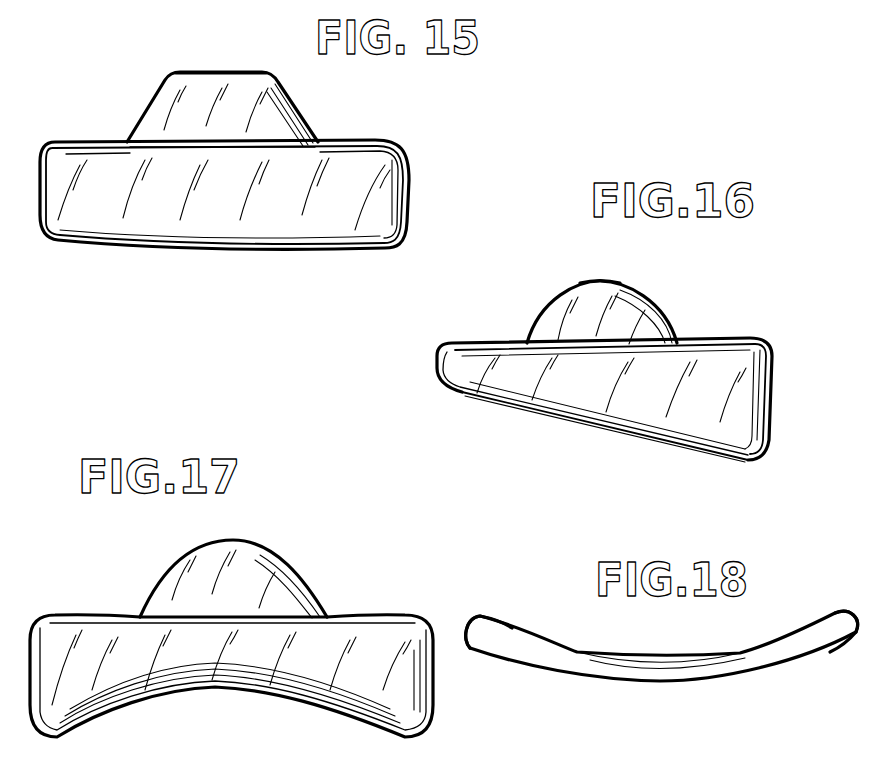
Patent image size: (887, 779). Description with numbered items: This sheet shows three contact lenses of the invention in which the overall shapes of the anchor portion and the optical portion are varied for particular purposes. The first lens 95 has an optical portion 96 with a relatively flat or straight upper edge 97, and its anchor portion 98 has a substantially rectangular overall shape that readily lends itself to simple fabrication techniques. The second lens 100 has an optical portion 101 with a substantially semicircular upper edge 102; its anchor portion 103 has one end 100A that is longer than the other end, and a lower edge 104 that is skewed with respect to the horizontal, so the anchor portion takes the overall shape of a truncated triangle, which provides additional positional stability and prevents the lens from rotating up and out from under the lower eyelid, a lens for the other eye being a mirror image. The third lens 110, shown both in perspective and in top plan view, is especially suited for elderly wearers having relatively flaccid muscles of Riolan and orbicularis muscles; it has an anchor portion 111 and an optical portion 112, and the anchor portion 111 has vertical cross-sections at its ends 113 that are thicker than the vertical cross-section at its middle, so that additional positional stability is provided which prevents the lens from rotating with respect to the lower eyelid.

In FIG. 15, the lens 95 is at (420, 178).
In FIG. 15, the optical portion 96 is at (272, 122).
In FIG. 15, the upper edge 97 is at (229, 71).
In FIG. 15, the anchor portion 98 is at (260, 228).
In FIG. 16, the lens 100 is at (783, 362).
In FIG. 16, the end 100A is at (775, 413).
In FIG. 16, the optical portion 101 is at (625, 318).
In FIG. 16, the upper edge 102 is at (600, 272).
In FIG. 16, the anchor portion 103 is at (680, 417).
In FIG. 16, the lower edge 104 is at (590, 430).
In FIG. 17, the lens 110 is at (374, 604).
In FIG. 18, the lens 110 is at (552, 633).
In FIG. 17, the anchor portion 111 is at (350, 683).
In FIG. 18, the anchor portion 111 is at (750, 663).
In FIG. 17, the optical portion 112 is at (250, 573).
In FIG. 18, the optical portion 112 is at (600, 665).
In FIG. 18, the ends 113 is at (485, 620).